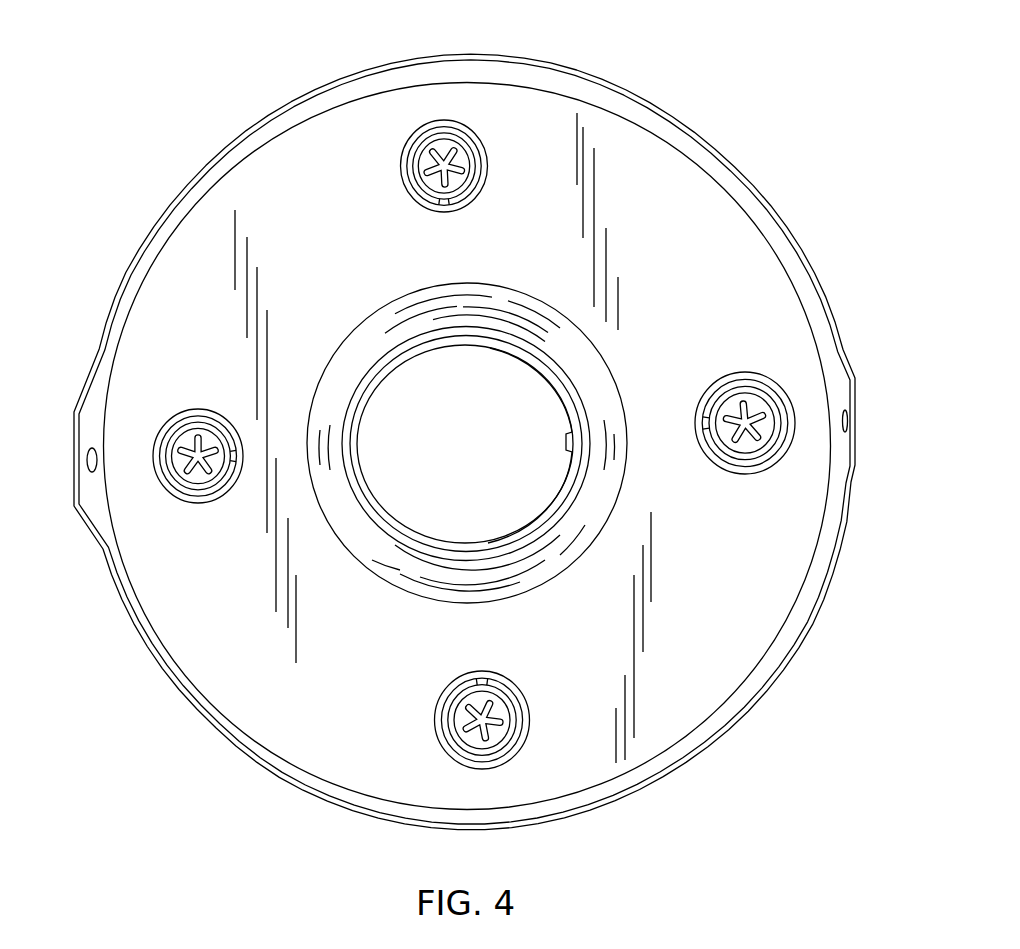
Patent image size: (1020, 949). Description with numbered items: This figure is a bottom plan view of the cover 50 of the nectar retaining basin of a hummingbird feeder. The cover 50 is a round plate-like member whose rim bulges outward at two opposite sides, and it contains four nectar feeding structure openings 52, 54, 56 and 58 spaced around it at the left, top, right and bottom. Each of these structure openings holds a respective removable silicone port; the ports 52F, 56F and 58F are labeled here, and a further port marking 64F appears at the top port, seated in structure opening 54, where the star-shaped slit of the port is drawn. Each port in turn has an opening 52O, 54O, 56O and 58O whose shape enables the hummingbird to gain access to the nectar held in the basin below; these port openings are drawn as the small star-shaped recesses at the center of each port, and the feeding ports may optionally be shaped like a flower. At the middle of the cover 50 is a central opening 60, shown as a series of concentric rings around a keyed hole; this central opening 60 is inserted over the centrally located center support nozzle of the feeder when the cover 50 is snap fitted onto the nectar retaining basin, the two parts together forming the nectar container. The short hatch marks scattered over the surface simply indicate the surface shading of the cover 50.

The cover 50 is at (108, 326).
The nectar feeding structure opening 52 is at (163, 475).
The removable silicone port 52F is at (187, 436).
The port opening 52O is at (192, 478).
The nectar feeding structure opening 54 is at (430, 155).
The port opening 54O is at (433, 162).
The fastener drive recess 64F is at (448, 138).
The nectar feeding structure opening 56 is at (748, 407).
The removable silicone port 56F is at (755, 410).
The port opening 56O is at (750, 407).
The nectar feeding structure opening 58 is at (470, 757).
The removable silicone port 58F is at (503, 733).
The port opening 58O is at (455, 727).
The central opening 60 is at (423, 346).